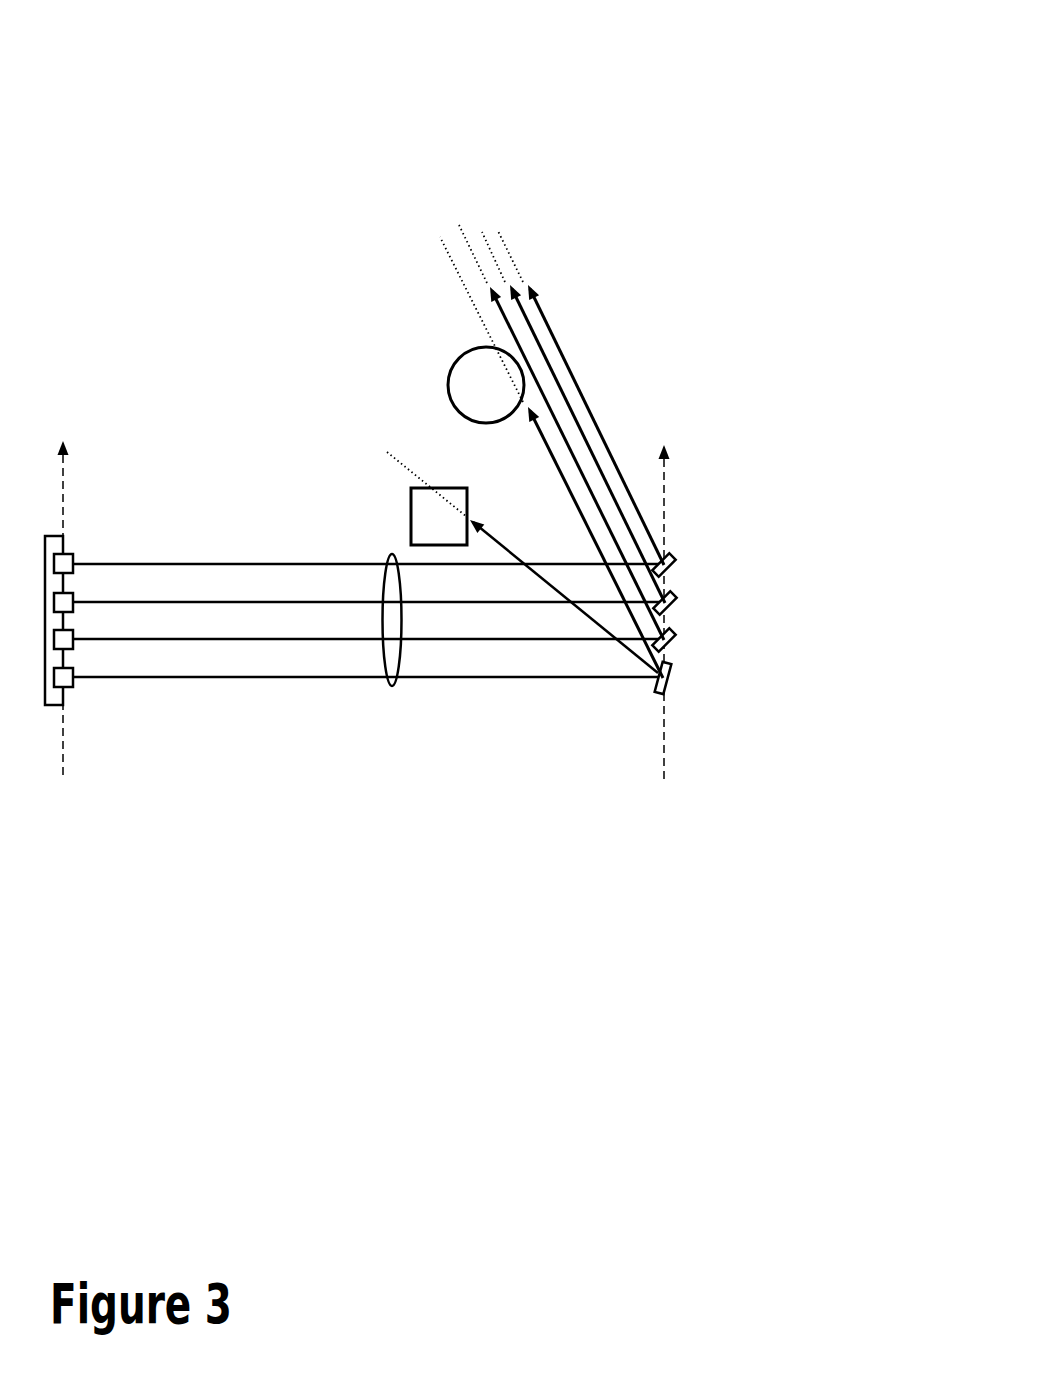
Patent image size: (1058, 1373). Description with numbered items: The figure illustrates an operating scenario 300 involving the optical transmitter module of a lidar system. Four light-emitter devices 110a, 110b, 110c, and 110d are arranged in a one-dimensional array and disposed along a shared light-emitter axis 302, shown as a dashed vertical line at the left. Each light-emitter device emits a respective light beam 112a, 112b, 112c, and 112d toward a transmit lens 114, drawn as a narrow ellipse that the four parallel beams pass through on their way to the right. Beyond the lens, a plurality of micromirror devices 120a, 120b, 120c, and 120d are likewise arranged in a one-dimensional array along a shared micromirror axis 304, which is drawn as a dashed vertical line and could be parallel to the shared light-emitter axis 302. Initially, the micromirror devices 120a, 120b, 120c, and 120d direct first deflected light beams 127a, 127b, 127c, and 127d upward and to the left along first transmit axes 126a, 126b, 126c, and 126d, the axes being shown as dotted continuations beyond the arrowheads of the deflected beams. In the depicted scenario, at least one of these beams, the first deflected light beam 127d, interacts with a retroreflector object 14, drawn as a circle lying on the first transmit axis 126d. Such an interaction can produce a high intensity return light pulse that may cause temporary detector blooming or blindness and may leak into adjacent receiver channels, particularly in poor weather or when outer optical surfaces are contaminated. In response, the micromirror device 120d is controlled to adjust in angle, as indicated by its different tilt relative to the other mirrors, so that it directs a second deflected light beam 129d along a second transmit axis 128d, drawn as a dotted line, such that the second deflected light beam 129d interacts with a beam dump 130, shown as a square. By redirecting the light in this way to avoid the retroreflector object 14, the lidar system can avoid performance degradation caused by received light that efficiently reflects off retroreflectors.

The operating scenario 300 is at (847, 80).
The shared light-emitter axis 302 is at (105, 610).
The shared micromirror axis 304 is at (706, 612).
The light-emitter device 110a is at (107, 549).
The light-emitter device 110b is at (109, 589).
The light-emitter device 110c is at (109, 626).
The light-emitter device 110d is at (109, 664).
The light beam 112a is at (368, 550).
The light beam 112b is at (368, 587).
The light beam 112c is at (368, 625).
The light beam 112d is at (367, 663).
The transmit lens 114 is at (424, 638).
The micromirror device 120a is at (710, 553).
The micromirror device 120b is at (710, 591).
The micromirror device 120c is at (710, 627).
The micromirror device 120d is at (708, 666).
The first transmit axis 126a is at (551, 256).
The first transmit axis 126b is at (527, 242).
The first transmit axis 126c is at (506, 229).
The first transmit axis 126d is at (442, 319).
The first deflected light beam 127a is at (596, 425).
The first deflected light beam 127b is at (587, 444).
The first deflected light beam 127c is at (577, 463).
The first deflected light beam 127d is at (595, 542).
The second transmit axis 128d is at (433, 480).
The second deflected light beam 129d is at (564, 593).
The beam dump 130 is at (425, 529).
The retroreflector object 14 is at (477, 394).